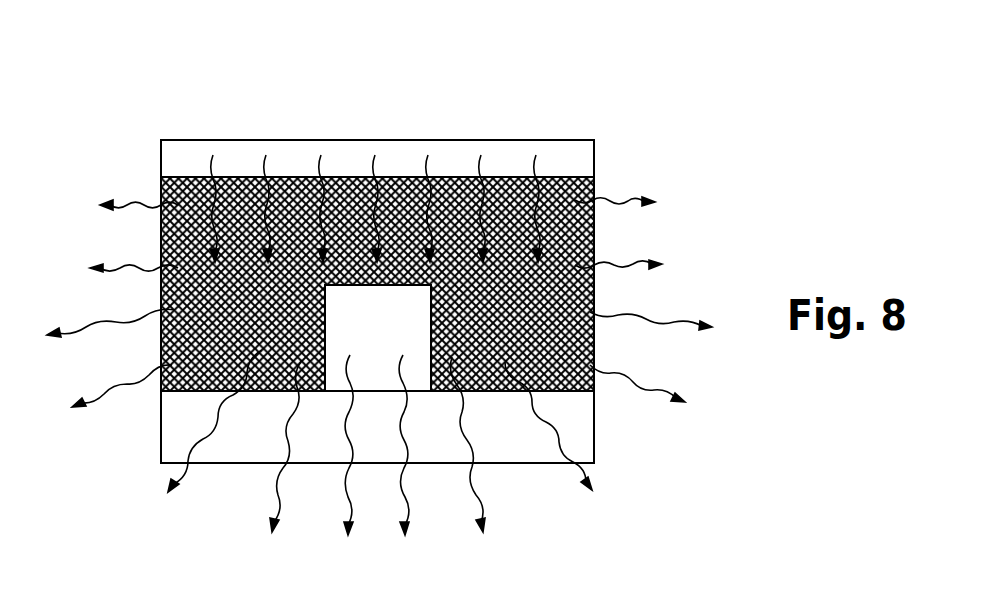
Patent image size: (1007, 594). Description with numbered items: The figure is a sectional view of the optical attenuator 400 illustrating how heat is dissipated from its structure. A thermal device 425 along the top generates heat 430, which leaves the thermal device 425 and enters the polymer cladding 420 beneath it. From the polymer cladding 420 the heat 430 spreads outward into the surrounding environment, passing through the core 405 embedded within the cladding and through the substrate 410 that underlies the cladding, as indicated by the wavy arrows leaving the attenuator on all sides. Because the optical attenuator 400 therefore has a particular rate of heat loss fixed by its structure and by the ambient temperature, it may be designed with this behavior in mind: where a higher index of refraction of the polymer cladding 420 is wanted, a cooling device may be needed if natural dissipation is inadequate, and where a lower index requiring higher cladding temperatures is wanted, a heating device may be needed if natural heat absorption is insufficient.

The optical attenuator 400 is at (744, 133).
The core 405 is at (402, 331).
The substrate 410 is at (578, 410).
The polymer cladding 420 is at (592, 325).
The thermal device 425 is at (458, 130).
The heat 430 is at (640, 302).